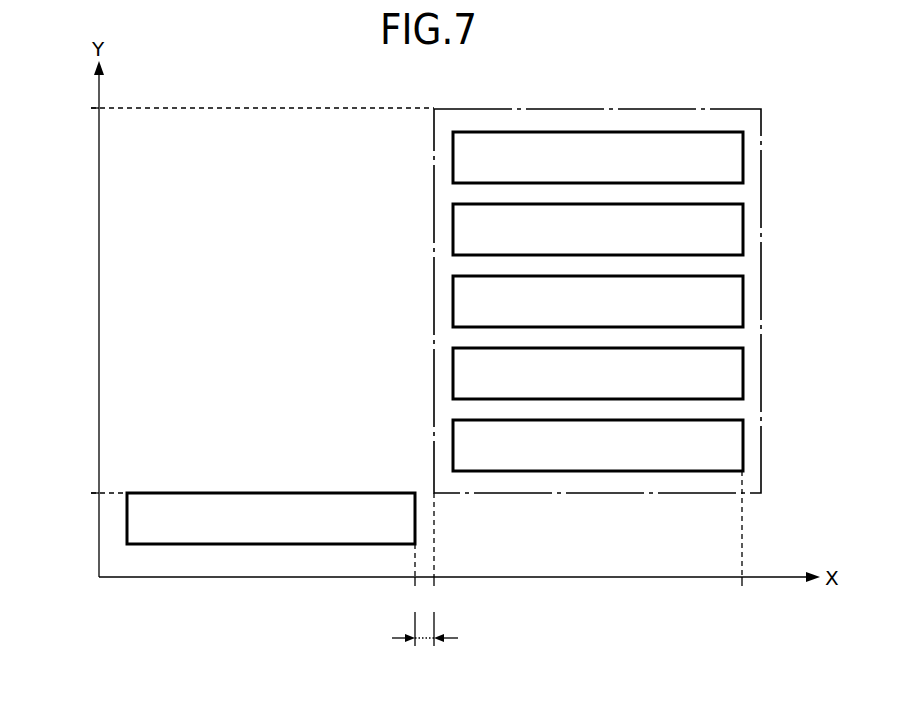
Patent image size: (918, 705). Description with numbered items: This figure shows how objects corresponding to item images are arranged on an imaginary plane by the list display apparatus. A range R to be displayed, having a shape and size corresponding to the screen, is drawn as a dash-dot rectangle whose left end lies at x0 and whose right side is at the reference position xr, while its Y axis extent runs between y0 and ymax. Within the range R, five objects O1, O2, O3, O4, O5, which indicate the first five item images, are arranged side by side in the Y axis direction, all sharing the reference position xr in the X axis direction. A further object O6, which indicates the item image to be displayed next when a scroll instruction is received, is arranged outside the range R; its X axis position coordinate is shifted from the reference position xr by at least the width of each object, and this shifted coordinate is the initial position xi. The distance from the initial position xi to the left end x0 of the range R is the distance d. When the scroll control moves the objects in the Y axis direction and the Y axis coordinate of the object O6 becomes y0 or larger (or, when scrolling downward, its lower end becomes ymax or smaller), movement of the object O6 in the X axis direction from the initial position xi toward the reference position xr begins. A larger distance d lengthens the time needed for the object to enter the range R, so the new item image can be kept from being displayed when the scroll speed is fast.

The object O1 is at (453, 162).
The object O2 is at (453, 233).
The object O3 is at (453, 301).
The object O4 is at (453, 373).
The object O5 is at (453, 445).
The object O6 is at (264, 492).
The range to be displayed R is at (762, 411).
The distance d is at (425, 640).
The initial position xi is at (408, 578).
The left end of the range to be displayed x0 is at (440, 552).
The reference position xr is at (742, 541).
The Y axis position y0 is at (94, 493).
The maximum Y axis position ymax is at (232, 108).